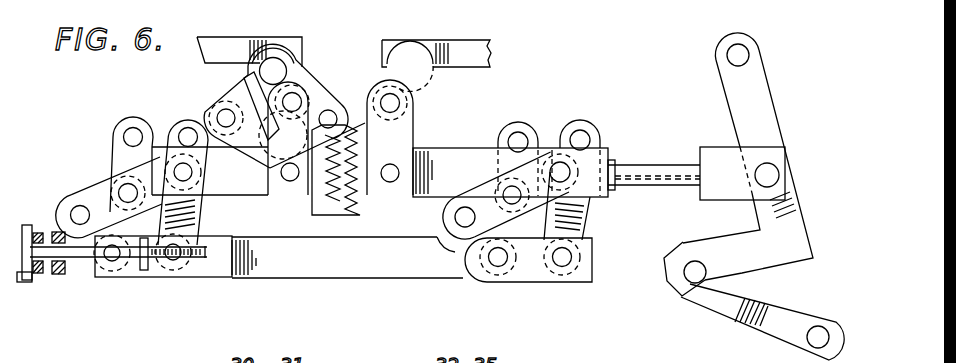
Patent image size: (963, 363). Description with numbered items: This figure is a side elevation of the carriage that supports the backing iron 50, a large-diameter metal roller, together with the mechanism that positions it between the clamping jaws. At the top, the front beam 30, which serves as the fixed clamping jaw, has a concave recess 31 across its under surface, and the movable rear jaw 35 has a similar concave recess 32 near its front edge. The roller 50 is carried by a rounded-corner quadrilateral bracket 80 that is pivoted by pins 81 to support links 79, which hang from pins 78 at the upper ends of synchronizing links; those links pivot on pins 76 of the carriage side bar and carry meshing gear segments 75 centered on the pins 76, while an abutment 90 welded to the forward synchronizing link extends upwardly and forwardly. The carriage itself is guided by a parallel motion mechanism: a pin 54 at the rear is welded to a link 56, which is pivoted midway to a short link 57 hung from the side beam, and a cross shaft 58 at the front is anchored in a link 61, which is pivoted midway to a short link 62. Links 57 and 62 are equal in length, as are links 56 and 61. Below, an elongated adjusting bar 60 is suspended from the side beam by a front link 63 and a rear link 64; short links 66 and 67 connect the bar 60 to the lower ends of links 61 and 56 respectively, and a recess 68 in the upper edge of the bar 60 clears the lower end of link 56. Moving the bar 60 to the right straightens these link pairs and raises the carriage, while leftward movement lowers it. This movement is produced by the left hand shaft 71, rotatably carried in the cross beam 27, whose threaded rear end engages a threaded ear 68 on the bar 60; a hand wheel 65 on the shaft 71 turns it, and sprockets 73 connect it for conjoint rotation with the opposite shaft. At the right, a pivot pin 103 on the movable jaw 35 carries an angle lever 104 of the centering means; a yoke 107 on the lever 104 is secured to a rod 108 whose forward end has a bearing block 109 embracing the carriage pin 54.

The cross beam 27 is at (42, 279).
The front beam 30 is at (240, 27).
The concave recess 31 is at (290, 40).
The concave recess 32 is at (408, 50).
The movable rear jaw 35 is at (468, 48).
The backing iron 50 is at (300, 54).
The pins 54 is at (548, 167).
The link 56 is at (447, 207).
The short link 57 is at (518, 113).
The two part shaft 58 is at (196, 171).
The bar 60 is at (320, 267).
The link 61 is at (98, 192).
The short link 62 is at (123, 150).
The front link 63 is at (192, 230).
The rear link 64 is at (575, 228).
The hand wheel 65 is at (31, 227).
The short link 66 is at (95, 246).
The short link 67 is at (460, 262).
The recess / threaded ear 68 is at (146, 272).
The left hand shaft 71 is at (207, 254).
The sprockets 73 is at (57, 277).
The gear segments 75 is at (347, 200).
The pins 76 is at (292, 178).
The pins 78 is at (293, 100).
The support links 79 is at (213, 100).
The bracket 80 is at (254, 186).
The pins 81 is at (220, 115).
The abutment 90 is at (247, 76).
The pivot pin 103 is at (740, 60).
The angle lever 104 is at (768, 127).
The yoke 107 is at (722, 153).
The rod 108 is at (661, 187).
The bearing block 109 is at (616, 153).